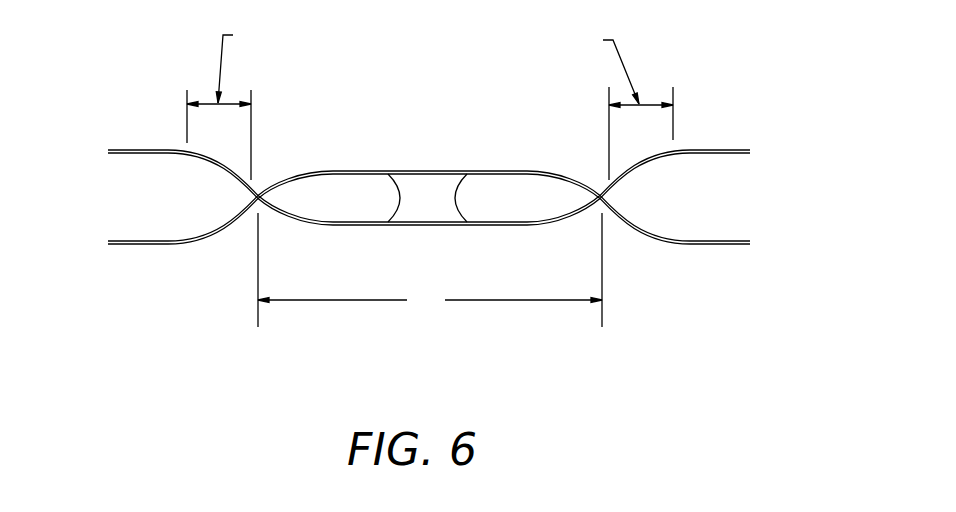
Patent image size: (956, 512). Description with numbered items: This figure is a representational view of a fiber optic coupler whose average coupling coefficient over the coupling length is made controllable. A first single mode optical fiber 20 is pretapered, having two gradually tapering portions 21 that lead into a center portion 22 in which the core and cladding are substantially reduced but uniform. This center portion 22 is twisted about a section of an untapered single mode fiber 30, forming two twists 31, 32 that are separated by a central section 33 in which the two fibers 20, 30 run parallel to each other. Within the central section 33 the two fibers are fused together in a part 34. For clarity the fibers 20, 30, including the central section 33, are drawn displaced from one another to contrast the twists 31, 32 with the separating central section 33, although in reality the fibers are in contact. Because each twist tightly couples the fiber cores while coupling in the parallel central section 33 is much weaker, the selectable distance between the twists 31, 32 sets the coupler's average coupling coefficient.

The first single mode optical fiber 20 is at (137, 155).
The untapered single mode fiber 30 is at (142, 245).
The gradually tapering portions 21 is at (197, 152).
The center portion 22 is at (412, 227).
The first twist 31 is at (258, 197).
The second twist 32 is at (602, 212).
The central section 33 is at (398, 102).
The fused part 34 is at (447, 187).